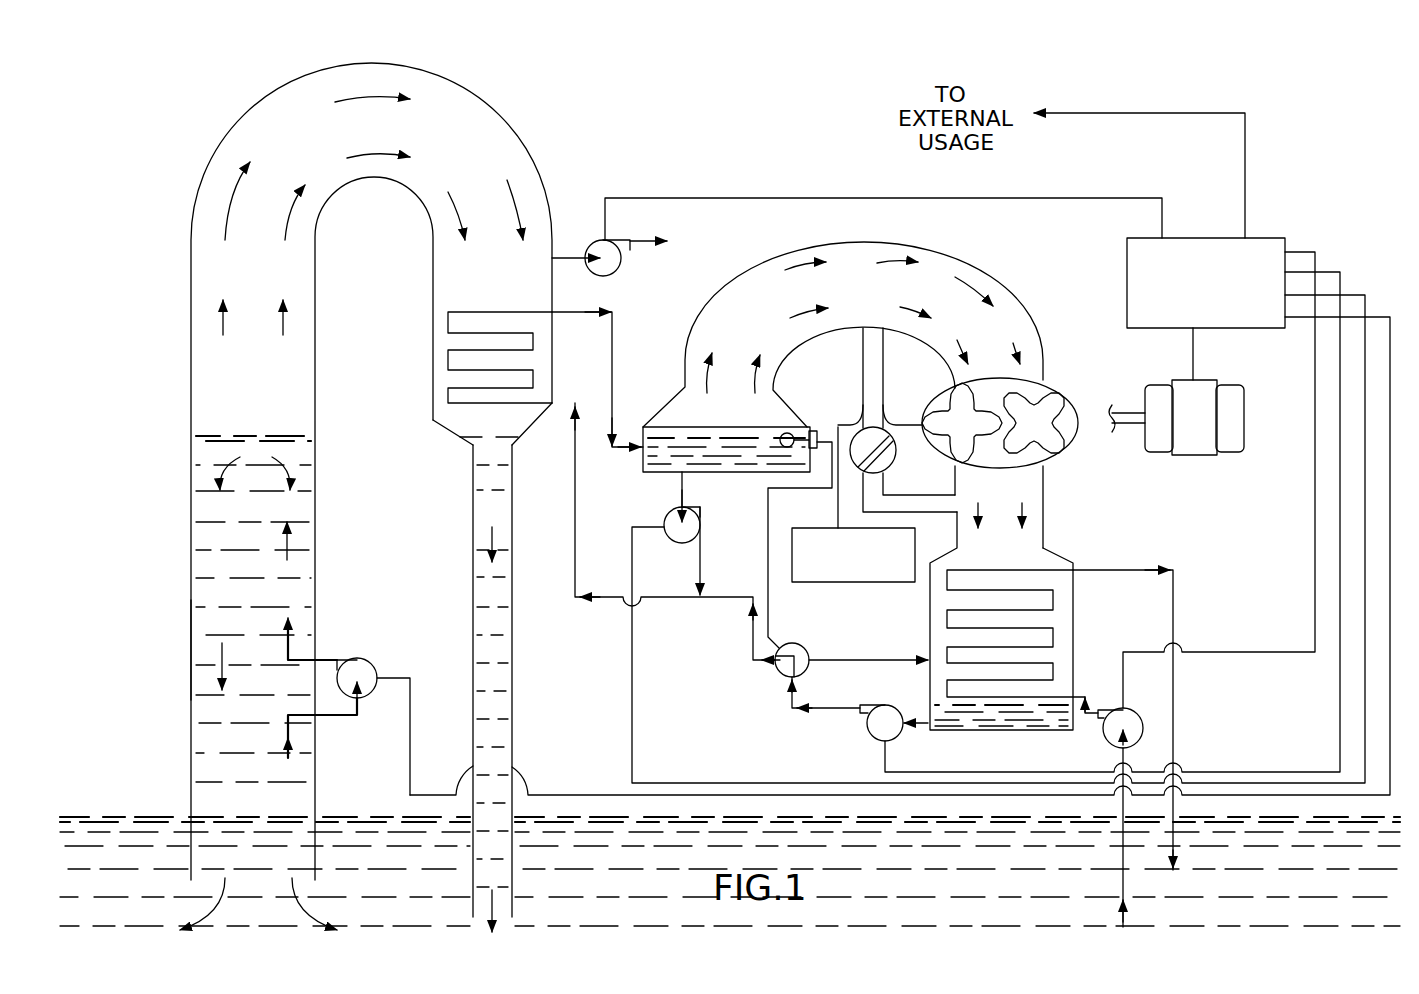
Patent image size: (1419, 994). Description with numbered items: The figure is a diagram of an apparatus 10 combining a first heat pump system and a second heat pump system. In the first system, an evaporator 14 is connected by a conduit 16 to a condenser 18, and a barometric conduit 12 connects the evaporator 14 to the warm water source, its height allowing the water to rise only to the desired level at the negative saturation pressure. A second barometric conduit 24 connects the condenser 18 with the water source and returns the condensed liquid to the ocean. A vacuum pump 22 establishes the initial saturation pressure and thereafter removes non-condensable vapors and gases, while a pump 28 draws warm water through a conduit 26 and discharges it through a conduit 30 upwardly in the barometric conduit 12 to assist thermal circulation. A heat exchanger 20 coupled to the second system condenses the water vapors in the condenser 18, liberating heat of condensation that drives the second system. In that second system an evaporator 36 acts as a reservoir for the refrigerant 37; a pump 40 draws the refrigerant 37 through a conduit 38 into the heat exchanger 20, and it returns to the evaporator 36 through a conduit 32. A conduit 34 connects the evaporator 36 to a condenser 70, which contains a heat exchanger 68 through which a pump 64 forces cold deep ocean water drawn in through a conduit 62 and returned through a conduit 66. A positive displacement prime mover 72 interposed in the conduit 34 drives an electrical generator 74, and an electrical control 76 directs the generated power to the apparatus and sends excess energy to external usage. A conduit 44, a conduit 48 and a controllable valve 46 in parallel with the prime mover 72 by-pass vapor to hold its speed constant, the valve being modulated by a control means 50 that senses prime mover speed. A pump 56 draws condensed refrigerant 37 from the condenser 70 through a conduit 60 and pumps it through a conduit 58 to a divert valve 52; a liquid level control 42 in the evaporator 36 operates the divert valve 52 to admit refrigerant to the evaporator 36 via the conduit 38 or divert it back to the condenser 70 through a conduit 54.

The apparatus 10 is at (724, 122).
The barometric conduit 12 is at (191, 652).
The evaporator 14 is at (312, 438).
The conduit 16 is at (228, 145).
The condenser 18 is at (448, 345).
The heat exchanger 20 is at (448, 397).
The vacuum pump 22 is at (622, 265).
The barometric conduit 24 is at (473, 548).
The conduit 26 is at (337, 716).
The pump 28 is at (372, 661).
The conduit 30 is at (322, 656).
The conduit 32 is at (612, 358).
The conduit 34 is at (772, 252).
The evaporator 36 is at (640, 473).
The refrigerant 37 is at (705, 465).
The conduit 38 is at (577, 603).
The pump 40 is at (700, 530).
The liquid level control 42 is at (814, 430).
The conduit 44 is at (863, 378).
The controllable valve 46 is at (895, 462).
The conduit 48 is at (940, 513).
The control means 50 is at (862, 583).
The divert valve 52 is at (795, 643).
The conduit 54 is at (882, 660).
The pump 56 is at (880, 705).
The conduit 58 is at (795, 712).
The conduit 60 is at (915, 727).
The conduit 62 is at (1118, 848).
The pump 64 is at (1100, 740).
The conduit 66 is at (1175, 712).
The heat exchanger 68 is at (1053, 635).
The condenser 70 is at (1065, 556).
The prime mover 72 is at (1060, 384).
The electrical generator 74 is at (1200, 456).
The electrical control 76 is at (1250, 330).